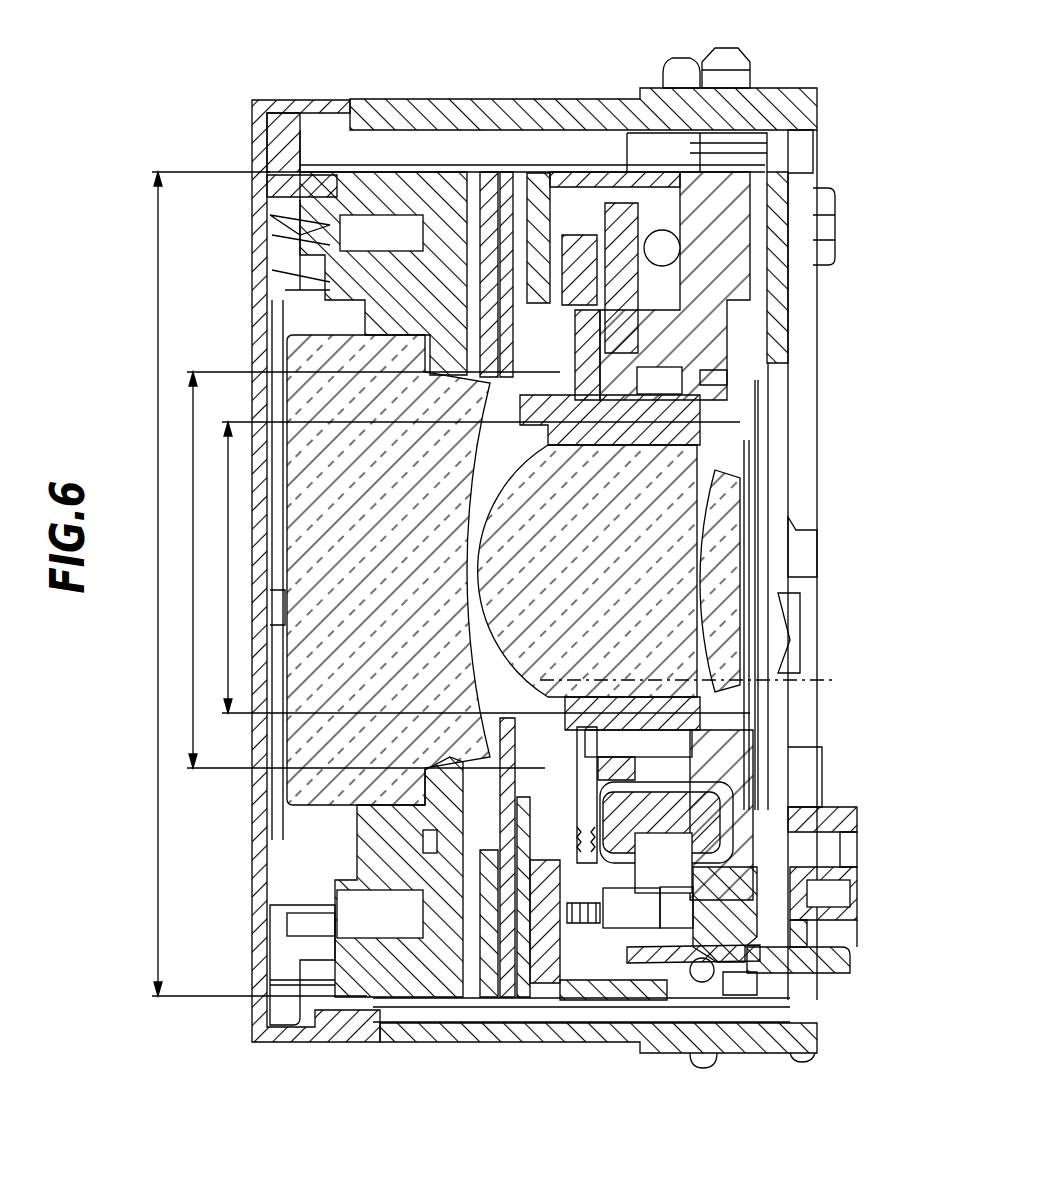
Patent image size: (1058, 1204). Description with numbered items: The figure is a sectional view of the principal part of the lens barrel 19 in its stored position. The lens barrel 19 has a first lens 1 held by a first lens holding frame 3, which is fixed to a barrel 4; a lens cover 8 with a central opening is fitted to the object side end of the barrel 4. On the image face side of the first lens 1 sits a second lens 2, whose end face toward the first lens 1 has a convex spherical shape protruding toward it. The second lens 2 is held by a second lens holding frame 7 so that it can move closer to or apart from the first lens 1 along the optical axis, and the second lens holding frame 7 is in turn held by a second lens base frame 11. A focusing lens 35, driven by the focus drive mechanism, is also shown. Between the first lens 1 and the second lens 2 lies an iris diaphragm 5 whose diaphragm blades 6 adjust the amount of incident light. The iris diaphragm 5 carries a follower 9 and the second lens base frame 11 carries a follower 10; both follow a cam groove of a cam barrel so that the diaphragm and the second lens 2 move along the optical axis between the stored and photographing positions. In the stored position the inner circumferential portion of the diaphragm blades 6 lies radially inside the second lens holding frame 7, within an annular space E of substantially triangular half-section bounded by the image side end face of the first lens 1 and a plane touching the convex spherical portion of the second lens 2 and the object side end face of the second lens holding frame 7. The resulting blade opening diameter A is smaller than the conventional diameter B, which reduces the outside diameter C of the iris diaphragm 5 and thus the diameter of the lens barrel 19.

The first lens 1 is at (287, 790).
The second lens 2 is at (680, 590).
The first lens holding frame 3 is at (443, 328).
The barrel 4 is at (522, 102).
The iris diaphragm 5 is at (577, 410).
The diaphragm blades 6 is at (540, 333).
The second lens holding frame 7 is at (650, 715).
The lens cover 8 is at (272, 900).
The follower 9 is at (683, 78).
The follower 10 is at (738, 75).
The second lens base frame 11 is at (705, 378).
The lens barrel 19 is at (388, 84).
The focusing lens 35 is at (733, 500).
The annular space E is at (700, 680).
The diameter of the inner circumferential portion of the diaphragm blades A is at (478, 567).
The diameter B is at (366, 570).
The outside diameter of the iris diaphragm C is at (252, 584).